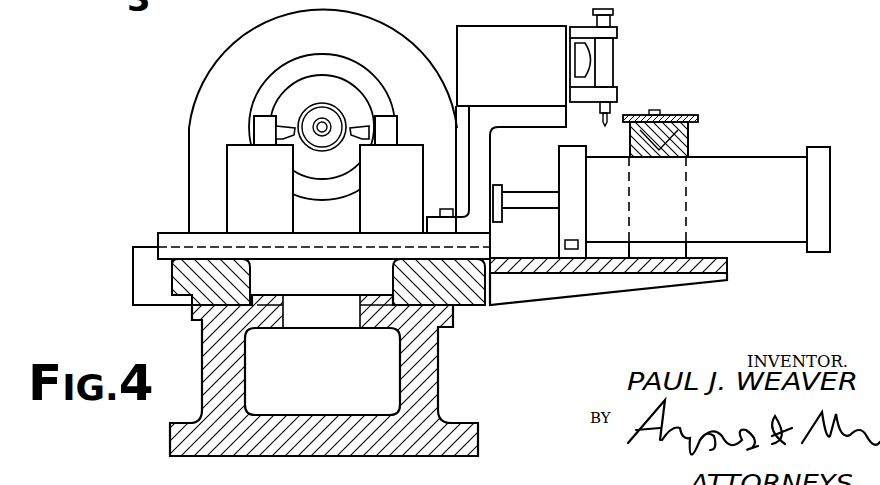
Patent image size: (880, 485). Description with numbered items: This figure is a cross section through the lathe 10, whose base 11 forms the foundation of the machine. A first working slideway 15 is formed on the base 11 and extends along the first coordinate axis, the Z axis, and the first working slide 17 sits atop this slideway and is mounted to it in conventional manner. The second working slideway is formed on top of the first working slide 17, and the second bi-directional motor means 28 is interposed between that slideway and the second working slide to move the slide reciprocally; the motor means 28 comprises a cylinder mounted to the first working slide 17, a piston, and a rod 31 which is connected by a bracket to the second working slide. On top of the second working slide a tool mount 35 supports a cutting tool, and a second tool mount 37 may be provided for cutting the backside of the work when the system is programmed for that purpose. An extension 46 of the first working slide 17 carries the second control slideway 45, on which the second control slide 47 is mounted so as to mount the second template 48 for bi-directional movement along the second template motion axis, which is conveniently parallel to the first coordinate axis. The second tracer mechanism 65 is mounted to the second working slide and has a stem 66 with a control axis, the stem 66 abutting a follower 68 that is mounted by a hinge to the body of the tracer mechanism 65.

The lathe 10 is at (108, 324).
The base 11 is at (192, 418).
The first working slideway 15 is at (204, 295).
The first working slide 17 is at (196, 259).
The second bi-directional motor means 28 is at (740, 151).
The rod 31 is at (540, 192).
The tool mount 35 is at (268, 201).
The second tool mount 37 is at (398, 198).
The second control slideway 45 is at (689, 148).
The extension 46 is at (550, 287).
The second control slide 47 is at (692, 132).
The second template 48 is at (636, 116).
The second tracer mechanism 65 is at (523, 84).
The stem 66 is at (586, 62).
The follower 68 is at (612, 116).